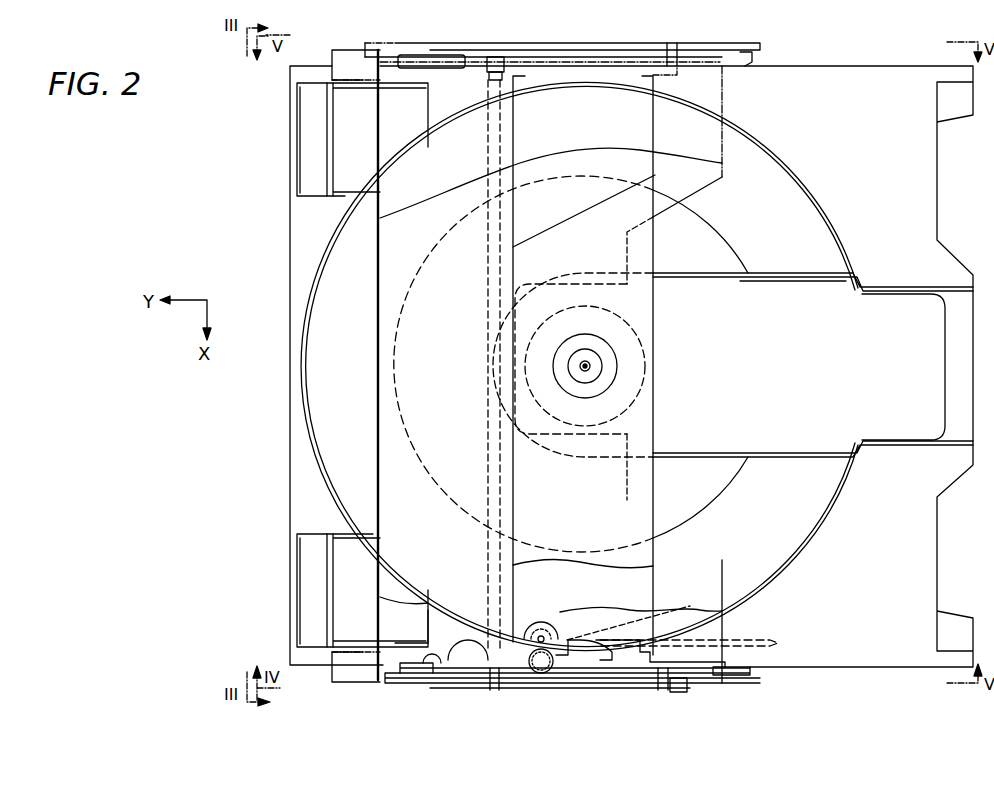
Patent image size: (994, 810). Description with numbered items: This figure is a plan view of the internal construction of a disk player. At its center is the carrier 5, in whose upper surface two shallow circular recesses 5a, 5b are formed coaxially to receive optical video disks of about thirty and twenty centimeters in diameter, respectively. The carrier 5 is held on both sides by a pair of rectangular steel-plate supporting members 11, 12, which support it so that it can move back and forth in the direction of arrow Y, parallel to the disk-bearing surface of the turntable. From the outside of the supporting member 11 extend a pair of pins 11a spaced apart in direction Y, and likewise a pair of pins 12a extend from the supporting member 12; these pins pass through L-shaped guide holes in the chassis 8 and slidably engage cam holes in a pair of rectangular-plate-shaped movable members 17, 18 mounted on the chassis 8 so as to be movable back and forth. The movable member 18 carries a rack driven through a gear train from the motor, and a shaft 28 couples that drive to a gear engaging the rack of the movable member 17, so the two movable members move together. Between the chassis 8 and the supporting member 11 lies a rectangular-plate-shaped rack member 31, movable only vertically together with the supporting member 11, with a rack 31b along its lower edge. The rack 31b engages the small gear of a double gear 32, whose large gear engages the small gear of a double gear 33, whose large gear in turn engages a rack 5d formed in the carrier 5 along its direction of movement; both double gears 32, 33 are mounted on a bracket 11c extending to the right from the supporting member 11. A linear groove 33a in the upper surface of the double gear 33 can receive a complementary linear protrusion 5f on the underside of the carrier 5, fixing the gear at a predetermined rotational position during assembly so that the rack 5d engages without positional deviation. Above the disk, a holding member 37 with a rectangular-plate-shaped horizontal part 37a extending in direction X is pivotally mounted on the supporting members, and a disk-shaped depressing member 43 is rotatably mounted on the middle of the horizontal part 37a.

The carrier 5 is at (290, 228).
The shallow circular recess 5a is at (817, 496).
The shallow circular recess 5b is at (700, 496).
The rack 5d is at (480, 618).
The linear protrusion 5f is at (758, 650).
The chassis 8 is at (392, 468).
The supporting member 11 is at (712, 680).
The pins 11a is at (499, 692).
The bracket 11c is at (652, 625).
The supporting member 12 is at (412, 55).
The pins 12a is at (495, 55).
The movable member 17 is at (683, 693).
The movable member 18 is at (727, 43).
The shaft 28 is at (488, 272).
The rack member 31 is at (398, 685).
The rack 31b is at (432, 668).
The double gear 32 is at (582, 642).
The double gear 33 is at (546, 618).
The linear groove 33a is at (552, 648).
The holding member 37 is at (654, 302).
The horizontal part 37a is at (638, 322).
The depressing member 43 is at (646, 359).